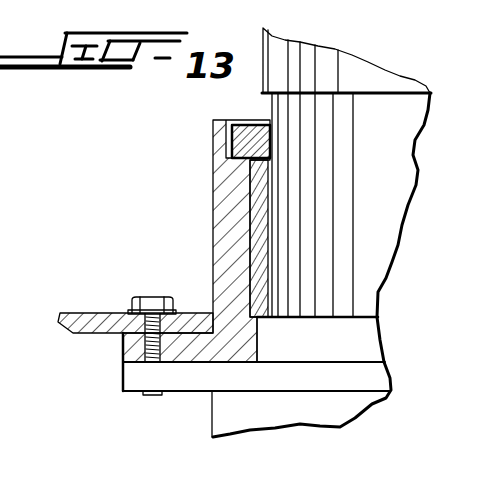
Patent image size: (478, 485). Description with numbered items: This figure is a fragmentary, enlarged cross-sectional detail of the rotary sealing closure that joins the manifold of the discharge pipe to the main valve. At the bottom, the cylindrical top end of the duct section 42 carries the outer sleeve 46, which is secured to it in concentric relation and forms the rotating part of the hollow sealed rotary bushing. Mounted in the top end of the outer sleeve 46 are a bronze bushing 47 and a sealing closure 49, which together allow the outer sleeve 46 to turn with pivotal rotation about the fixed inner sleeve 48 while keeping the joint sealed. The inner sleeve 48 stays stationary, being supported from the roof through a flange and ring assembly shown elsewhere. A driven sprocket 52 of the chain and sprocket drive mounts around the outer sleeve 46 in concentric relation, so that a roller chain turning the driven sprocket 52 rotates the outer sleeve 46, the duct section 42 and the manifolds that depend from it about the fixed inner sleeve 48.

The duct section 42 is at (256, 385).
The outer sleeve 46 is at (213, 163).
The bronze bushing 47 is at (265, 236).
The inner sleeve 48 is at (263, 45).
The sealing closure 49 is at (242, 124).
The driven sprocket 52 is at (92, 313).